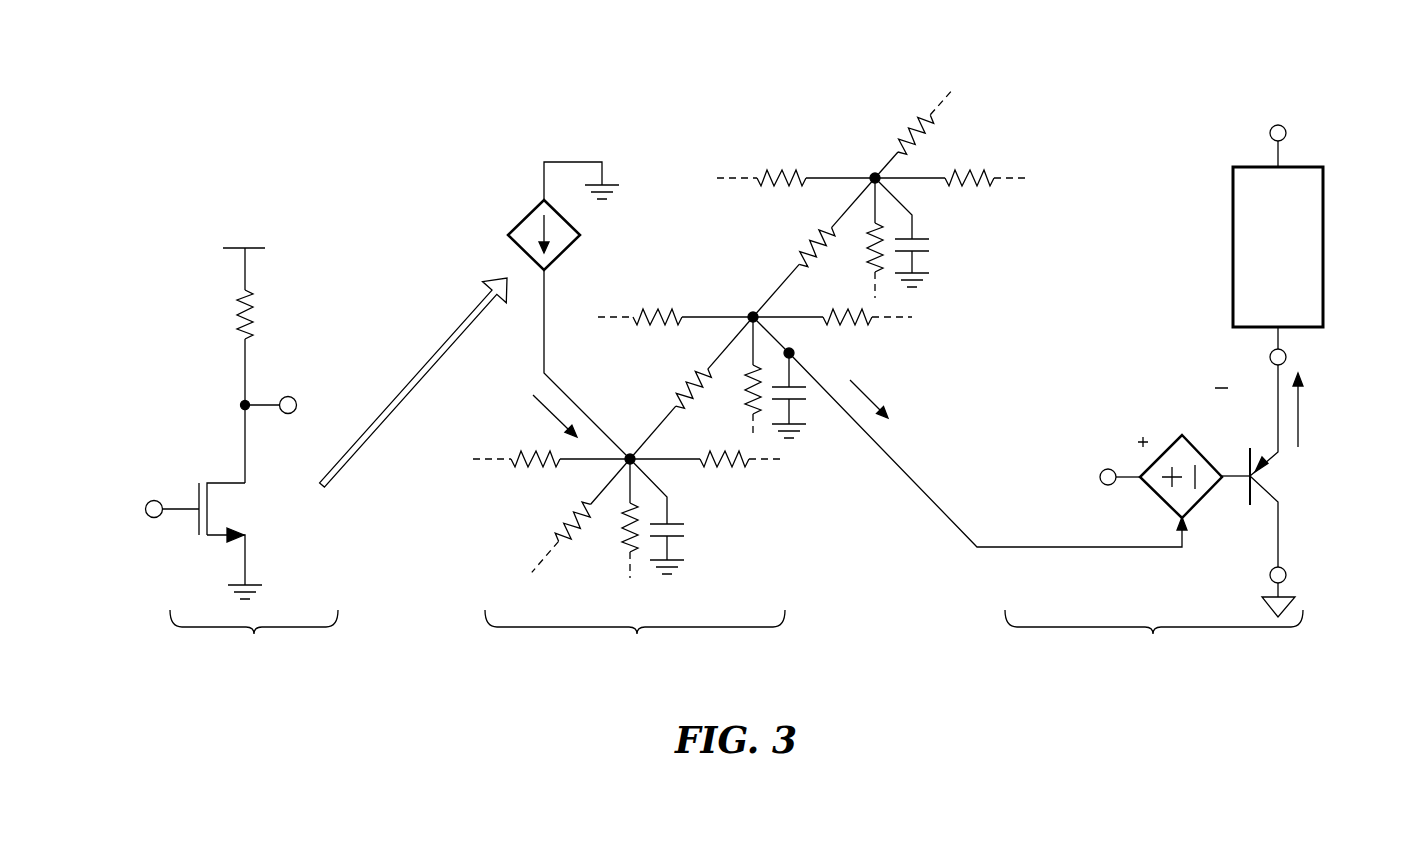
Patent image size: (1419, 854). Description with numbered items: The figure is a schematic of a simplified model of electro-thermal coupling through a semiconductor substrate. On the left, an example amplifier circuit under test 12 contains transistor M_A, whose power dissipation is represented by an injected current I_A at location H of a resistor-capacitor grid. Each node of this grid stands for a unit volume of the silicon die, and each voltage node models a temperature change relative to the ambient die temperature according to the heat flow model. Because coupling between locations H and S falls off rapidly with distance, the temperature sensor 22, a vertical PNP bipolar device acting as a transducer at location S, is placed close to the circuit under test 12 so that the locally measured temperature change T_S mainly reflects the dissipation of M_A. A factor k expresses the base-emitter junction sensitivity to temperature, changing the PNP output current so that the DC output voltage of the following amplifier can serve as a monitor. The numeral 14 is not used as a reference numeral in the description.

The circuit under test 12 is at (223, 438).
The electro-thermal coupling network 14 is at (753, 379).
The temperature sensor 22 is at (1191, 376).